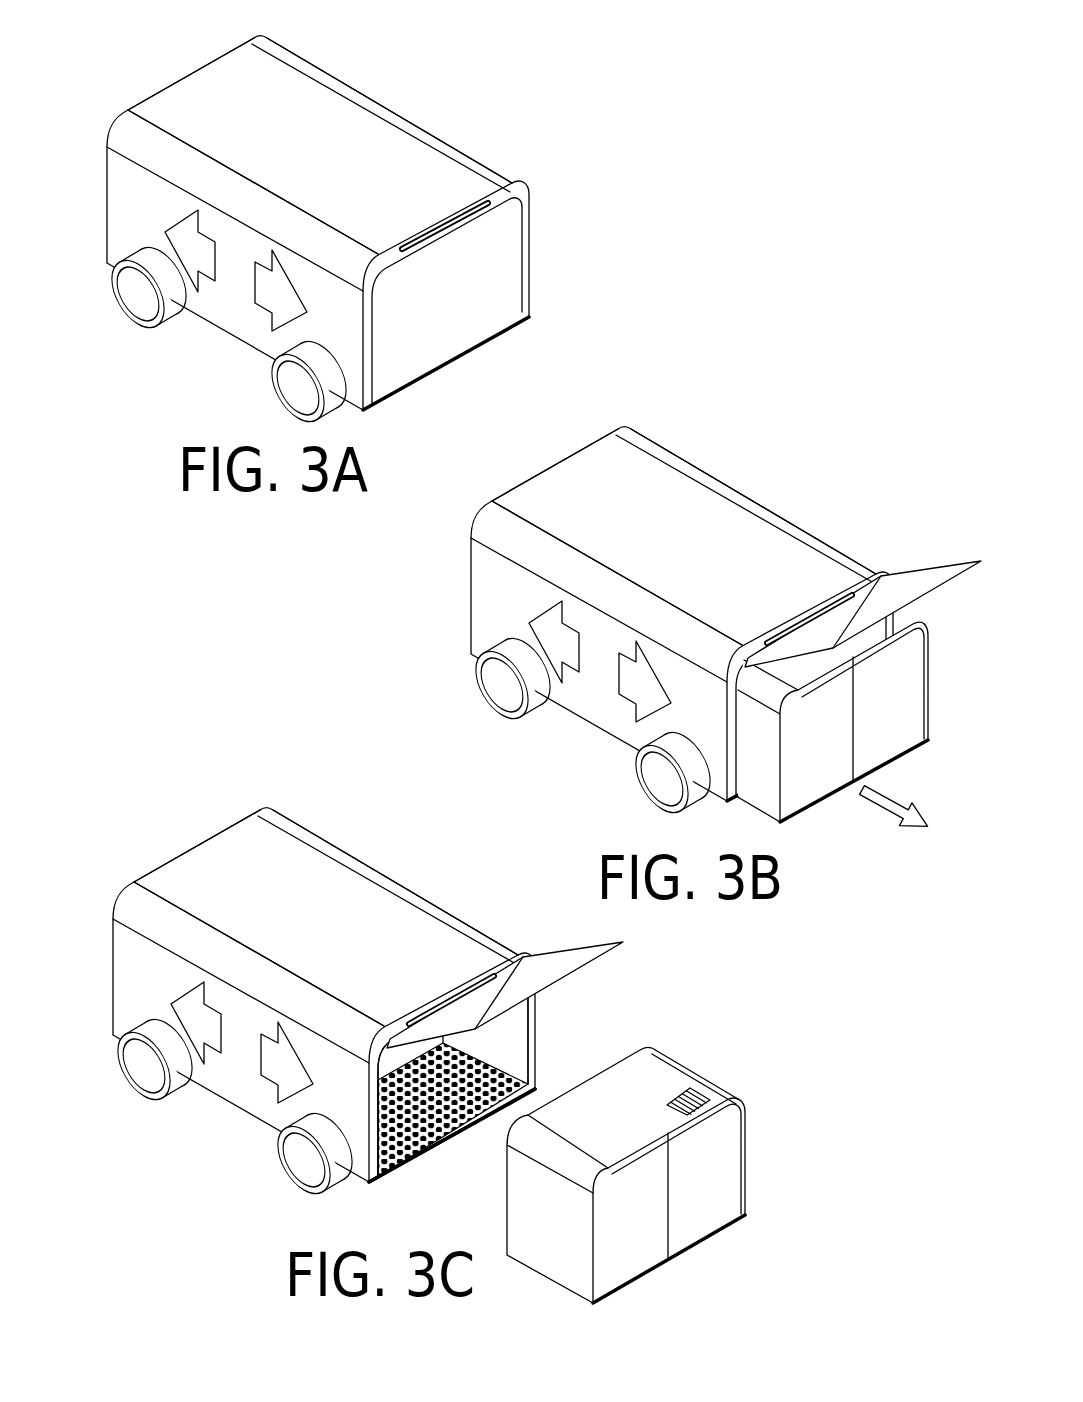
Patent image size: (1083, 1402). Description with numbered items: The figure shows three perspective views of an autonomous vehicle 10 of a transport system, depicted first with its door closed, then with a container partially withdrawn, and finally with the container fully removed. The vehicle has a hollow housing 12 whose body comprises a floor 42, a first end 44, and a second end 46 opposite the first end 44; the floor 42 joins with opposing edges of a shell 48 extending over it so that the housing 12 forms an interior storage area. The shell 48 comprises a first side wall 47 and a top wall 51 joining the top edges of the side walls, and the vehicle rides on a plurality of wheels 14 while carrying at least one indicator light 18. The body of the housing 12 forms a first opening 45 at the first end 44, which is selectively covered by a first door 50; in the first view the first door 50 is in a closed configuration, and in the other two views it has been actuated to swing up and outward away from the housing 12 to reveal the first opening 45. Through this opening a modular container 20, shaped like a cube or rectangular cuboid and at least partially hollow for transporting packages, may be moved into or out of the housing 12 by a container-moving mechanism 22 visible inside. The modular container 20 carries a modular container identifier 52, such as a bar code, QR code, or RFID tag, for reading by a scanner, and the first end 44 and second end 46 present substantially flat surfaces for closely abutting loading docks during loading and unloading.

In FIG. 3A, the autonomous vehicle 10 is at (440, 101).
In FIG. 3B, the autonomous vehicle 10 is at (442, 566).
In FIG. 3C, the autonomous vehicle 10 is at (106, 842).
In FIG. 3A, the housing 12 is at (453, 173).
In FIG. 3B, the housing 12 is at (706, 501).
In FIG. 3C, the housing 12 is at (318, 860).
In FIG. 3A, the wheels 14 is at (115, 305).
In FIG. 3B, the wheels 14 is at (478, 697).
In FIG. 3C, the wheels 14 is at (120, 1078).
In FIG. 3A, the indicator light 18 is at (185, 223).
In FIG. 3B, the indicator light 18 is at (547, 620).
In FIG. 3C, the indicator light 18 is at (192, 996).
In FIG. 3B, the modular container 20 is at (897, 688).
In FIG. 3C, the modular container 20 is at (655, 1169).
In FIG. 3C, the container-moving mechanism 22 is at (450, 1133).
In FIG. 3C, the floor 42 is at (417, 1163).
In FIG. 3A, the first end 44 is at (397, 250).
In FIG. 3B, the first end 44 is at (760, 640).
In FIG. 3C, the first end 44 is at (402, 1022).
In FIG. 3C, the first opening 45 is at (505, 1042).
In FIG. 3A, the second end 46 is at (150, 92).
In FIG. 3B, the second end 46 is at (516, 485).
In FIG. 3C, the second end 46 is at (162, 862).
In FIG. 3A, the first side wall 47 is at (123, 193).
In FIG. 3B, the first side wall 47 is at (486, 594).
In FIG. 3C, the first side wall 47 is at (130, 960).
In FIG. 3A, the shell 48 is at (300, 85).
In FIG. 3B, the shell 48 is at (768, 538).
In FIG. 3C, the shell 48 is at (415, 915).
In FIG. 3A, the first door 50 is at (478, 327).
In FIG. 3B, the first door 50 is at (927, 582).
In FIG. 3C, the first door 50 is at (568, 960).
In FIG. 3A, the top wall 51 is at (223, 73).
In FIG. 3B, the top wall 51 is at (588, 470).
In FIG. 3C, the top wall 51 is at (232, 845).
In FIG. 3C, the modular container identifier 52 is at (705, 1110).